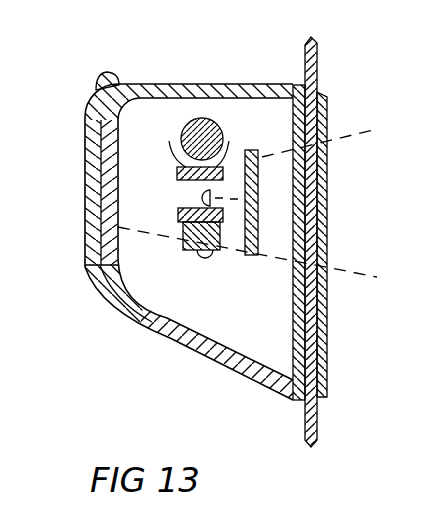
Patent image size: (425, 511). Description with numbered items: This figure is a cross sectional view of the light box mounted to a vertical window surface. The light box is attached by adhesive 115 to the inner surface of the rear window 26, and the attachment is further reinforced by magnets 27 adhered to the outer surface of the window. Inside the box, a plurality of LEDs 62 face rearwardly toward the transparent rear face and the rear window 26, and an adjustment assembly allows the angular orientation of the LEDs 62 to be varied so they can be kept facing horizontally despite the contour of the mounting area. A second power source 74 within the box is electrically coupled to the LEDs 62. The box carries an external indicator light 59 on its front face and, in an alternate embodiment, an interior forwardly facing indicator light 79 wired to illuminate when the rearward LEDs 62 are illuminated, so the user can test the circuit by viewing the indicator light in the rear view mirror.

The rear window 26 is at (318, 77).
The magnets 27 is at (327, 347).
The external indicator light 59 is at (93, 284).
The LEDs 62 is at (190, 197).
The second power source 74 is at (215, 122).
The interior forwardly facing indicator light 79 is at (204, 265).
The adhesive 115 is at (300, 406).